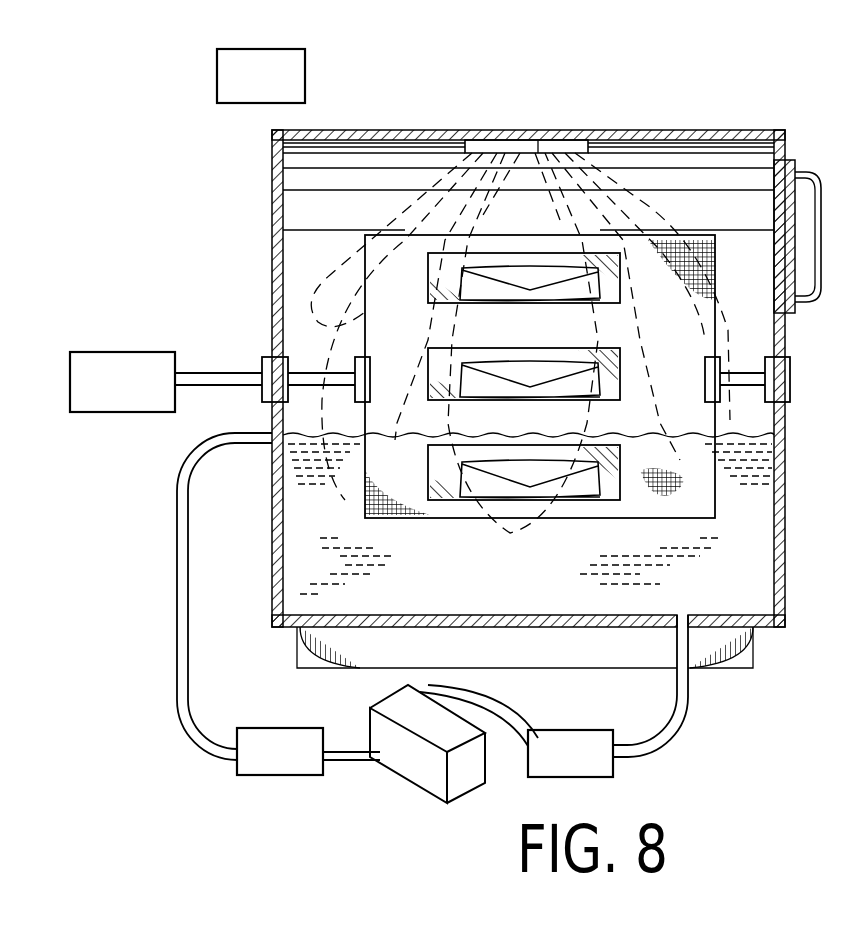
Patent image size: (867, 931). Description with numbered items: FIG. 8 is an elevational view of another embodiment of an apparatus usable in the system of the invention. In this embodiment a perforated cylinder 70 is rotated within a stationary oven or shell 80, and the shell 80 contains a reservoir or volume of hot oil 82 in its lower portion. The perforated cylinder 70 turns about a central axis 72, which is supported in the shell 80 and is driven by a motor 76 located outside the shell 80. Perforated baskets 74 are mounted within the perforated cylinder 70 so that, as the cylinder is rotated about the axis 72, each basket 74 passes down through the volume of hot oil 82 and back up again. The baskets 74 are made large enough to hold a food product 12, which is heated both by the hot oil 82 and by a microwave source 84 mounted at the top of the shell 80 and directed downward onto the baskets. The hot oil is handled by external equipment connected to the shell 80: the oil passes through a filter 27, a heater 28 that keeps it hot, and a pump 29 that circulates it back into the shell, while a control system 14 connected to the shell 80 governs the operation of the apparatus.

The food product 12 is at (530, 382).
The control system 14 is at (342, 130).
The filter 27 is at (570, 753).
The heater 28 is at (430, 766).
The pump 29 is at (308, 751).
The perforated cylinder 70 is at (390, 235).
The central axis 72 is at (312, 370).
The perforated baskets 74 is at (580, 255).
The motor 76 is at (122, 382).
The shell 80 is at (690, 127).
The volume of hot oil 82 is at (330, 487).
The microwave source 84 is at (538, 152).